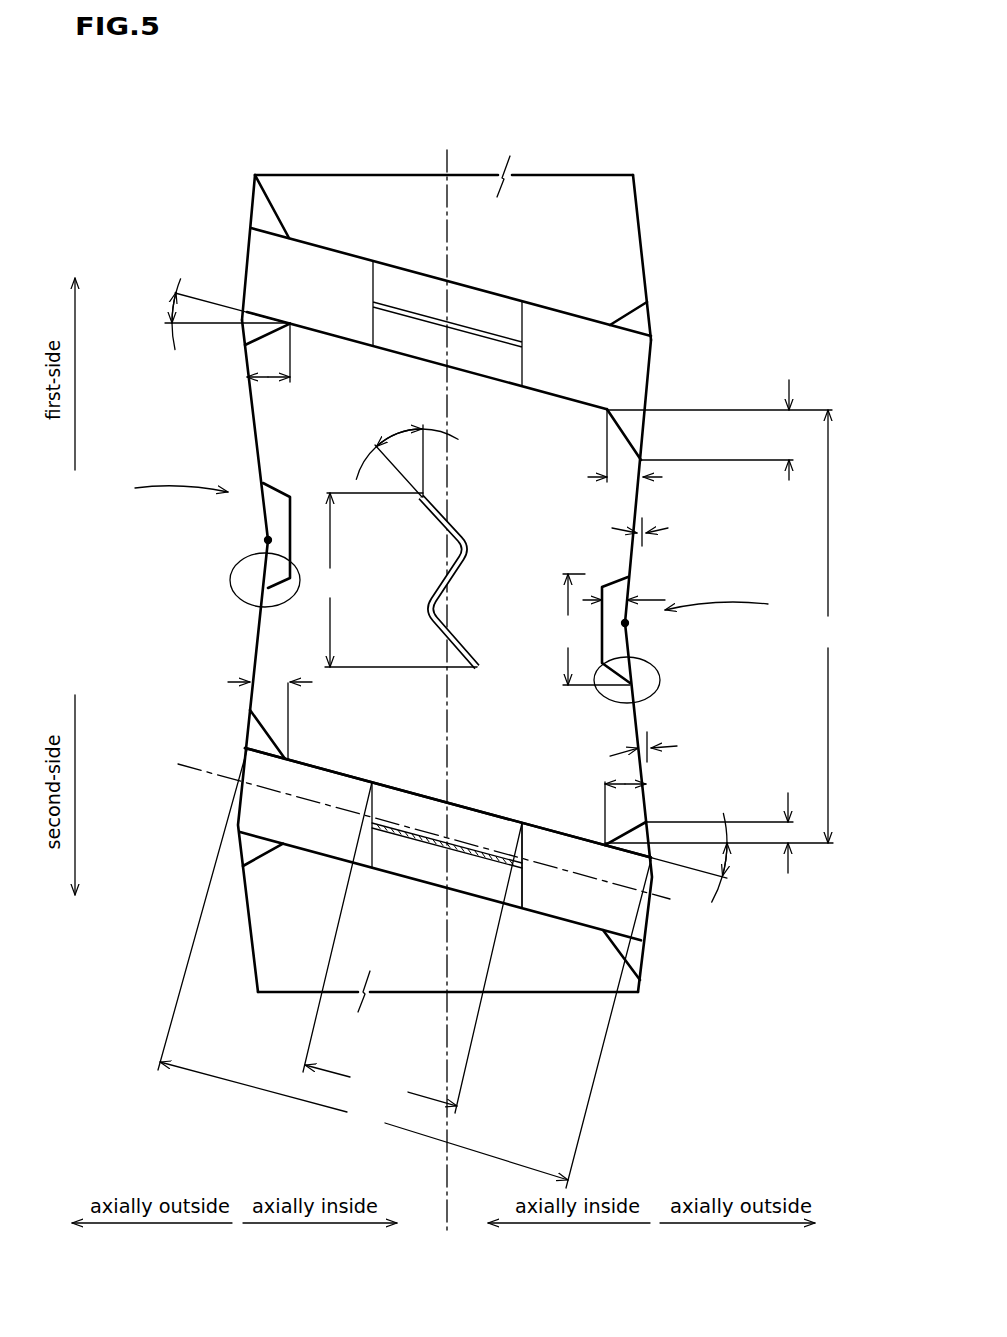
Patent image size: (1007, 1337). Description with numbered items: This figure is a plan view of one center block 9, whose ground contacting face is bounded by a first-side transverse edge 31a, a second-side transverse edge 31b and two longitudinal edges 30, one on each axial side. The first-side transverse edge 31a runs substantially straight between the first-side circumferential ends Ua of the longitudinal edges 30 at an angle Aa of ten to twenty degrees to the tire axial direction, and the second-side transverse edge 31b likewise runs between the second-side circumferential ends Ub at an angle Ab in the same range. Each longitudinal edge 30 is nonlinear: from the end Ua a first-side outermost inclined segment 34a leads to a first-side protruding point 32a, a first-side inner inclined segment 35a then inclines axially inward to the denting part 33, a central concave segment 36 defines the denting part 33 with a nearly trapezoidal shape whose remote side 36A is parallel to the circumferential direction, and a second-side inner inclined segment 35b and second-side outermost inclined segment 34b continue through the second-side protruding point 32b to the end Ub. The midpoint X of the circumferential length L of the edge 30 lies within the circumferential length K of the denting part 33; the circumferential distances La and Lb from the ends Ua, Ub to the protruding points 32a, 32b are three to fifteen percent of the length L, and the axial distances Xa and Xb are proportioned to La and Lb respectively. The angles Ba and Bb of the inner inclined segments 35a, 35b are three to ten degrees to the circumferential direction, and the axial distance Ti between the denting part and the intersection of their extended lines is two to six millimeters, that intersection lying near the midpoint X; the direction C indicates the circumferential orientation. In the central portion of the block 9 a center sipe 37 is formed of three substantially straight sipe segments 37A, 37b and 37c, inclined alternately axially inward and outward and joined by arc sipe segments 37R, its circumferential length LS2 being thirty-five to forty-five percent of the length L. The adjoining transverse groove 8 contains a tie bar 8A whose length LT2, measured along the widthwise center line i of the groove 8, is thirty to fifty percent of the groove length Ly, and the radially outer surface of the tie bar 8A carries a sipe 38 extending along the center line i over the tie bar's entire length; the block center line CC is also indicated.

The transverse groove 8 is at (545, 885).
The tie bar 8A is at (520, 888).
The center block 9 is at (560, 745).
The longitudinal edge 30 is at (252, 402).
The first-side transverse edge 31a is at (340, 337).
The second-side transverse edge 31b is at (353, 773).
The first-side protruding point 32a is at (242, 348).
The second-side protruding point 32b is at (243, 706).
The denting part 33 is at (232, 588).
The first-side outermost inclined segment 34a is at (646, 452).
The second-side outermost inclined segment 34b is at (627, 835).
The first-side inner inclined segment 35a is at (257, 448).
The second-side inner inclined segment 35b is at (257, 645).
The central concave segment 36 is at (262, 570).
The remote side 36A is at (445, 628).
The center sipe 37 is at (470, 488).
The straight sipe segment 37A is at (455, 527).
The straight sipe segment 37b is at (443, 578).
The straight sipe segment 37c is at (480, 660).
The arc sipe segment 37R is at (473, 550).
The sipe 38 is at (377, 830).
The block center line CC is at (447, 678).
The widthwise center line i is at (186, 766).
The midpoint X is at (262, 539).
The edge direction C is at (449, 552).
The circumferential length of the center sipe LS2 is at (393, 580).
The angle Aa is at (214, 314).
The angle Ab is at (719, 858).
The first-side circumferential end Ua is at (288, 318).
The second-side circumferential end Ub is at (288, 762).
The axial distance Xa is at (270, 381).
The axial distance Xb is at (291, 688).
The circumferential distance La is at (719, 430).
The circumferential distance Lb is at (790, 834).
The circumferential length of the longitudinal edge L is at (827, 626).
The circumferential length of the denting part K is at (595, 629).
The axial distance Ti is at (624, 587).
The angle Ba is at (640, 543).
The angle Bb is at (643, 741).
The length of the transverse groove Ly is at (404, 969).
The length of the tie bar LT2 is at (412, 947).